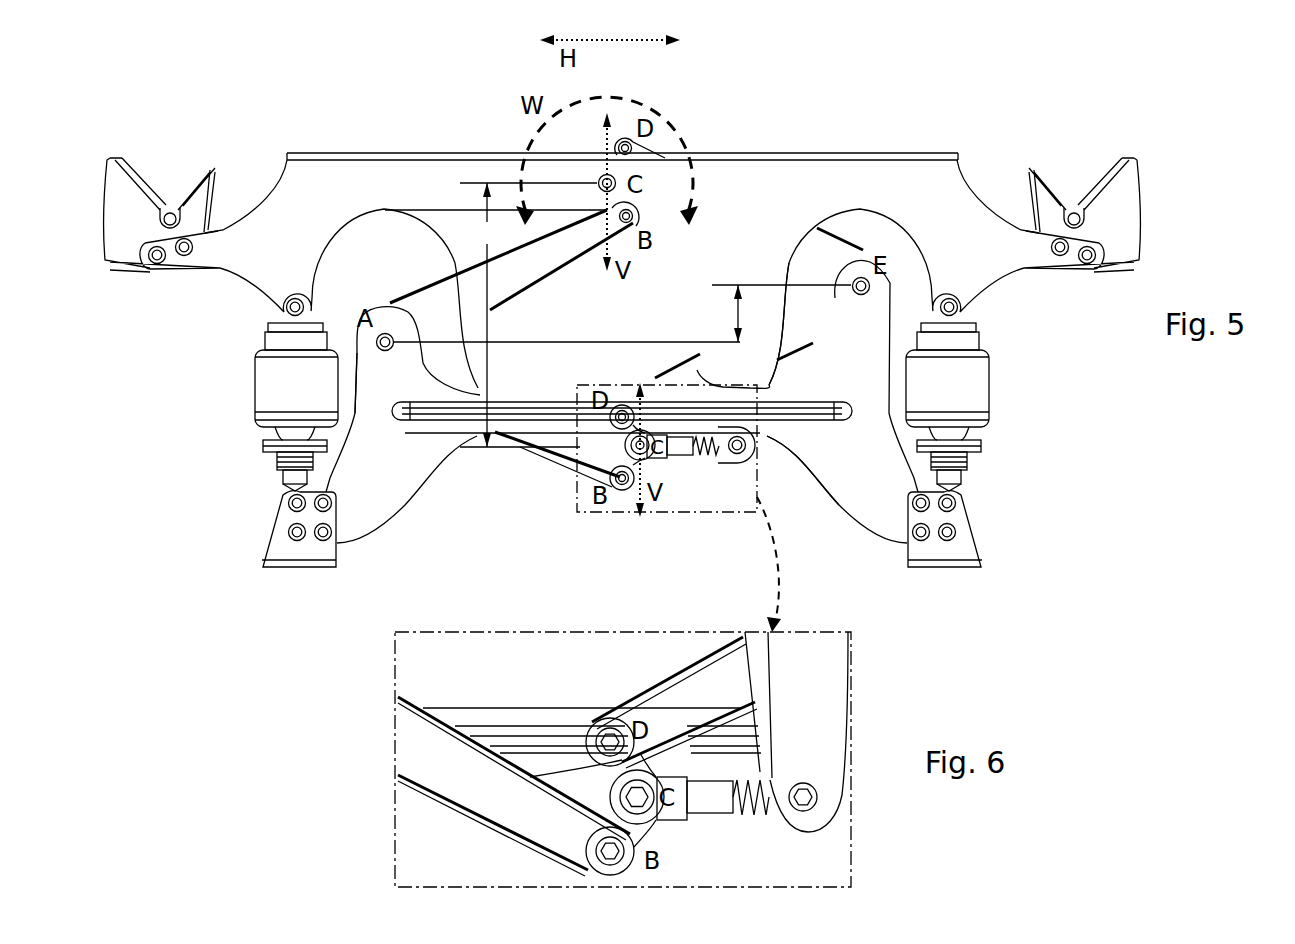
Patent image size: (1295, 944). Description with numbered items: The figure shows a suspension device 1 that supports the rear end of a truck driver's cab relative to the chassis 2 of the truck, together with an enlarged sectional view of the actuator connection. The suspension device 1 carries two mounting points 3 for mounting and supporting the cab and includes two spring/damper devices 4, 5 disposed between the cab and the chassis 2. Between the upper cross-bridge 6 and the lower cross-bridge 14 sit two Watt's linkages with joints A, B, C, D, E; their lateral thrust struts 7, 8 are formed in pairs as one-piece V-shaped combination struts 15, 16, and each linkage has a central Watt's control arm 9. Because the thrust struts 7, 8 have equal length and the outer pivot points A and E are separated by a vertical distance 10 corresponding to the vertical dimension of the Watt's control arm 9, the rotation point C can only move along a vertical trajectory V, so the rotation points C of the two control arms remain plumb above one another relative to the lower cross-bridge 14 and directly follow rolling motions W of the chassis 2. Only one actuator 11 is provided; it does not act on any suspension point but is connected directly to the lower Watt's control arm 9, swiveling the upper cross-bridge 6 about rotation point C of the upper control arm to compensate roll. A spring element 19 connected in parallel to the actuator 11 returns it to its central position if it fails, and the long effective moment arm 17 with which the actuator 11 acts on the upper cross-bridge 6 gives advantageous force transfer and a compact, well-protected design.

In FIG. 5, the suspension device 1 is at (232, 684).
In FIG. 5, the chassis 2 is at (250, 528).
In FIG. 5, the mounting points 3 is at (170, 186).
In FIG. 5, the spring/damper device 4 is at (230, 376).
In FIG. 5, the spring/damper device 5 is at (1014, 376).
In FIG. 5, the upper cross-bridge 6 is at (857, 188).
In FIG. 5, the lateral thrust strut 7 is at (510, 273).
In FIG. 6, the lateral thrust strut 7 is at (480, 777).
In FIG. 5, the lateral thrust strut 8 is at (692, 375).
In FIG. 6, the lateral thrust strut 8 is at (672, 710).
In FIG. 5, the Watt's control arm 9 is at (613, 432).
In FIG. 6, the Watt's control arm 9 is at (592, 742).
In FIG. 5, the vertical distance 10 is at (622, 313).
In FIG. 5, the actuator 11 is at (683, 445).
In FIG. 6, the actuator 11 is at (712, 793).
In FIG. 5, the lower cross-bridge 14 is at (860, 487).
In FIG. 5, the V-shaped combination strut 15 is at (437, 330).
In FIG. 5, the V-shaped combination strut 16 is at (808, 262).
In FIG. 5, the effective moment arm 17 is at (487, 315).
In FIG. 5, the spring element 19 is at (711, 447).
In FIG. 6, the spring element 19 is at (752, 797).